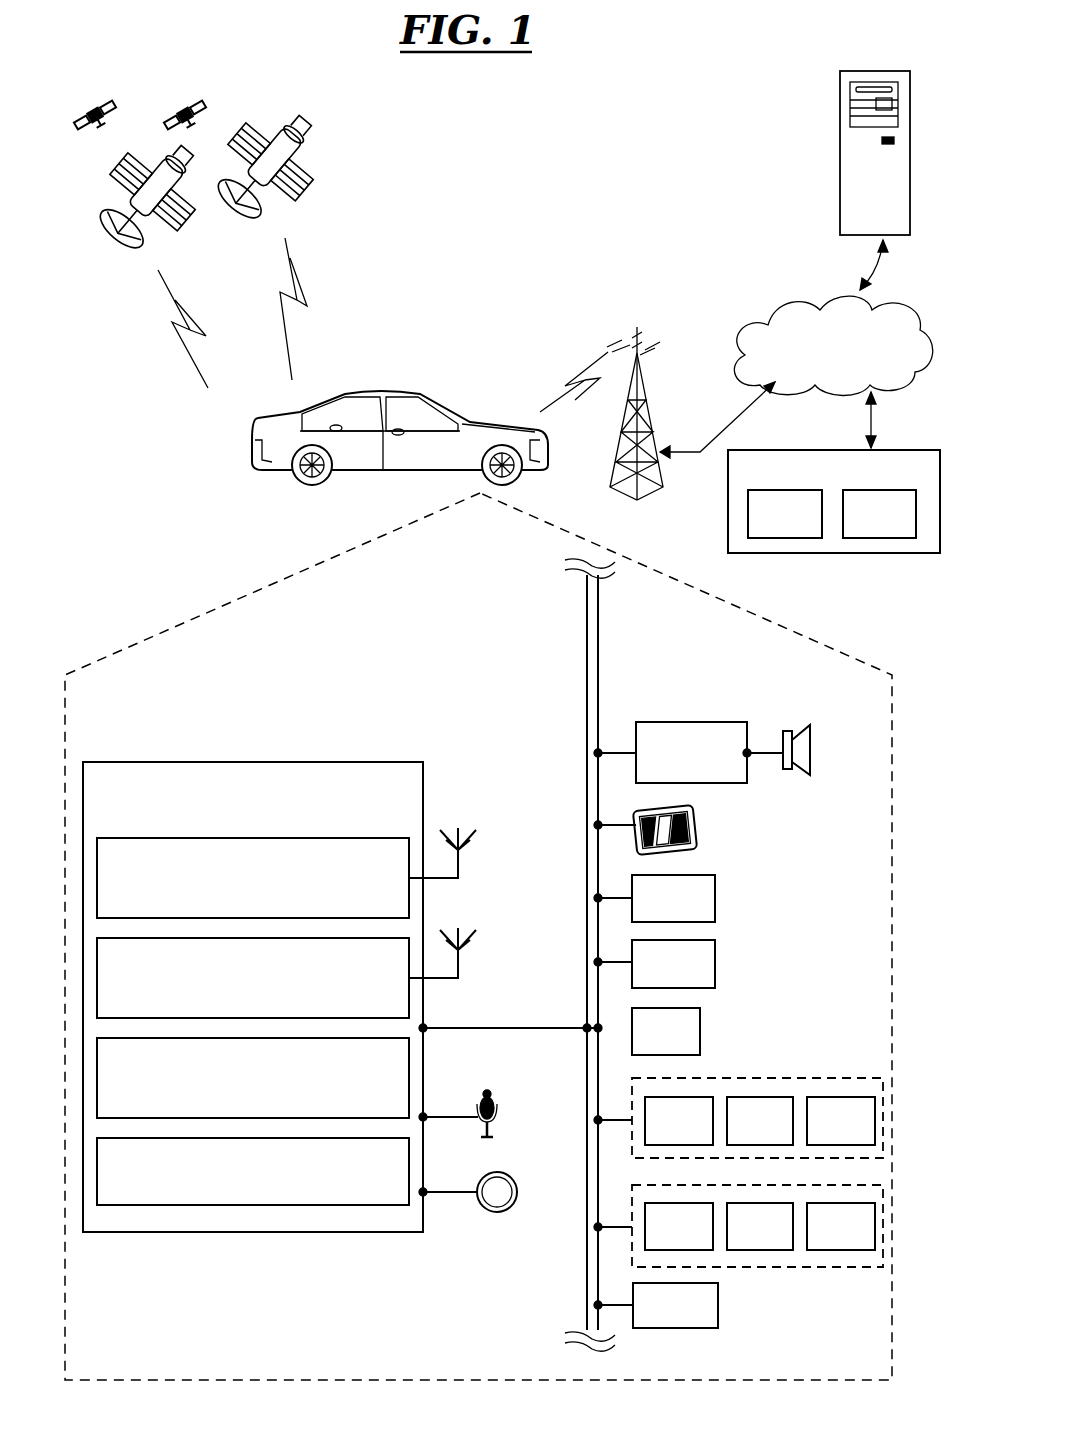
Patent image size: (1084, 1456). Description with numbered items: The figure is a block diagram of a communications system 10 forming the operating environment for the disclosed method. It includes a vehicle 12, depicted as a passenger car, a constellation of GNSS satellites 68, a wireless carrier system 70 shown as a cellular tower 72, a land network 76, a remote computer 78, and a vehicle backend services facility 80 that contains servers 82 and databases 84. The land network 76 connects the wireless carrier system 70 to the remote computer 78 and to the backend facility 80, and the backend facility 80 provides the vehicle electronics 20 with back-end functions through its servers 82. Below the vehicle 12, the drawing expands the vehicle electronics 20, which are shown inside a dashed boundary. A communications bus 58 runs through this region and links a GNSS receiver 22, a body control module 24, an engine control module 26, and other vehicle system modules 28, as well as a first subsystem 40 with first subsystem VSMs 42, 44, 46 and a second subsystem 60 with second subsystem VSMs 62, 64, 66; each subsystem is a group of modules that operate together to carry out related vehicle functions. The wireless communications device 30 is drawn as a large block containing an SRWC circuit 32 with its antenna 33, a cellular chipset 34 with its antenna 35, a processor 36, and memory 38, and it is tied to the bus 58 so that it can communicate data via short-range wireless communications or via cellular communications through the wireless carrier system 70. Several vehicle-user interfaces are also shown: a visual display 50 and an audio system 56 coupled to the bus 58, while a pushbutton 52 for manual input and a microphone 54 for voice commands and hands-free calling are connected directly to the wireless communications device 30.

The communications system 10 is at (740, 50).
The vehicle 12 is at (372, 393).
The vehicle electronics 20 is at (893, 1090).
The global navigation satellite system (GNSS) receiver 22 is at (715, 893).
The body control module 24 is at (715, 958).
The engine control module 26 is at (700, 1028).
The other vehicle system modules 28 is at (718, 1310).
The wireless communications device 30 is at (130, 762).
The SRWC circuit 32 is at (253, 878).
The antenna 33 is at (460, 866).
The cellular chipset 34 is at (253, 978).
The antenna 35 is at (460, 966).
The processor 36 is at (253, 1078).
The memory 38 is at (253, 1171).
The first subsystem 40 is at (808, 1078).
The first subsystem VSM 42 is at (679, 1121).
The first subsystem VSM 44 is at (760, 1121).
The first subsystem VSM 46 is at (841, 1121).
The visual display 50 is at (700, 822).
The pushbutton 52 is at (512, 1178).
The microphone 54 is at (495, 1108).
The audio system 56 is at (752, 768).
The communications bus 58 is at (585, 1255).
The second subsystem 60 is at (808, 1267).
The second subsystem VSM 62 is at (679, 1226).
The second subsystem VSM 64 is at (760, 1226).
The second subsystem VSM 66 is at (841, 1226).
The GNSS satellites 68 is at (236, 97).
The wireless carrier system 70 is at (662, 313).
The cellular tower 72 is at (645, 388).
The land network 76 is at (905, 360).
The remote computer 78 is at (840, 147).
The vehicle backend services facility 80 is at (834, 501).
The server 82 is at (785, 514).
The database 84 is at (879, 514).